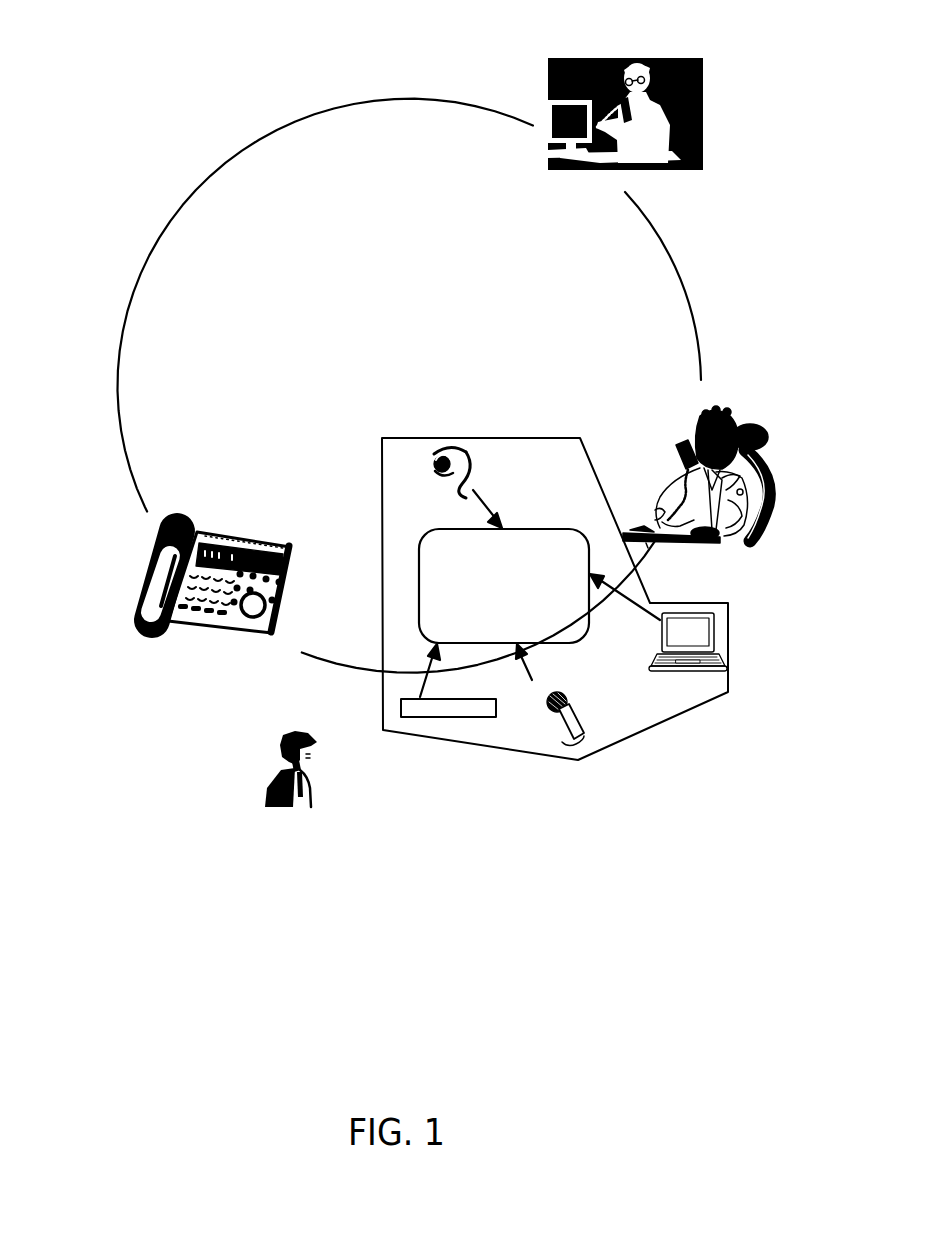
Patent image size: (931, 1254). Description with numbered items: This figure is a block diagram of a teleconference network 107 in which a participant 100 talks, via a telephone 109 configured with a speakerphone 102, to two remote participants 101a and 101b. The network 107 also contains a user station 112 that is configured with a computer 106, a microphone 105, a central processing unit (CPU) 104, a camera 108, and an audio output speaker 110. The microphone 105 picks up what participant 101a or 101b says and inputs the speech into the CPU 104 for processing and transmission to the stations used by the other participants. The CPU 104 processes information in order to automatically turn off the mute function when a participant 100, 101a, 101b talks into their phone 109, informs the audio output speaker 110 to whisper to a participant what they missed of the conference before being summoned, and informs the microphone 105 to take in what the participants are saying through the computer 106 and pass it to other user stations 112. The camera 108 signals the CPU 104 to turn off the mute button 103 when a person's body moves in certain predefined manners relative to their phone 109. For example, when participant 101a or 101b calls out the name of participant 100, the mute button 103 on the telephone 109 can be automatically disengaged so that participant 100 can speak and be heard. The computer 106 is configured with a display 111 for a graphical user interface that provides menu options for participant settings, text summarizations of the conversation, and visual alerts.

The participant 100 is at (293, 736).
The participant 101a is at (612, 58).
The participant 101b is at (703, 420).
The speakerphone 102 is at (250, 612).
The mute button 103 is at (283, 548).
The central processing unit (CPU) 104 is at (539, 593).
The microphone 105 is at (580, 737).
The computer 106 is at (720, 662).
The teleconference network 107 is at (233, 155).
The camera 108 is at (443, 446).
The telephone 109 is at (145, 588).
The audio output speaker 110 is at (456, 717).
The display 111 is at (703, 623).
The user station 112 is at (500, 752).